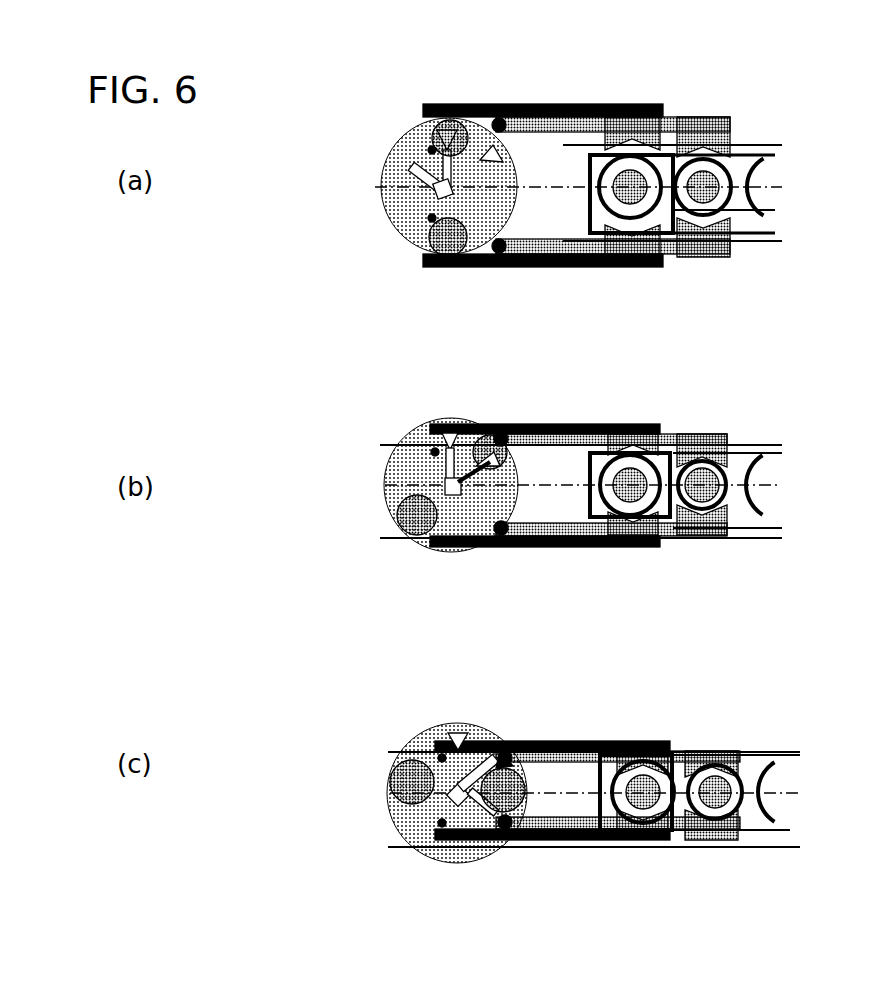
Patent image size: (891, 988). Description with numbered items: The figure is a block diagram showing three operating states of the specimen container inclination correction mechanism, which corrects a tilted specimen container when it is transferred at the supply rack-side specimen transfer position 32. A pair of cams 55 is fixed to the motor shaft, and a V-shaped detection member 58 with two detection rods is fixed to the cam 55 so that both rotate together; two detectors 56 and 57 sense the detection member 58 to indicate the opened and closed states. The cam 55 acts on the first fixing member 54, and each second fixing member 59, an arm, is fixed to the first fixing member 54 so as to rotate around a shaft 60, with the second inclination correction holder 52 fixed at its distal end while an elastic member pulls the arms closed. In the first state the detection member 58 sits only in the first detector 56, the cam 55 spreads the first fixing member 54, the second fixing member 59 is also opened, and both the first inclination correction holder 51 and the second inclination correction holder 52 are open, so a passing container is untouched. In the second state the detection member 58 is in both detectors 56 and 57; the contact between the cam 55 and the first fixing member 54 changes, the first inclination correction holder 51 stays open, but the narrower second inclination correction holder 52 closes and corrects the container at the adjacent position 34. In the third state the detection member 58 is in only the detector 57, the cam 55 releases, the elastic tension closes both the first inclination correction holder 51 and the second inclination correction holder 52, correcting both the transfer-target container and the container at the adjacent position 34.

The supply rack-side specimen transfer position 32 is at (560, 106).
The adjacent position 34 is at (778, 186).
The first inclination correction holder 51 is at (640, 108).
The second inclination correction holder 52 is at (730, 108).
The first fixing member 54 is at (587, 266).
The cam 55 is at (392, 176).
The first detector 56 is at (437, 105).
The second detector 57 is at (480, 106).
The detection member 58 is at (425, 190).
The second fixing member 59 is at (727, 245).
The shaft 60 is at (505, 265).